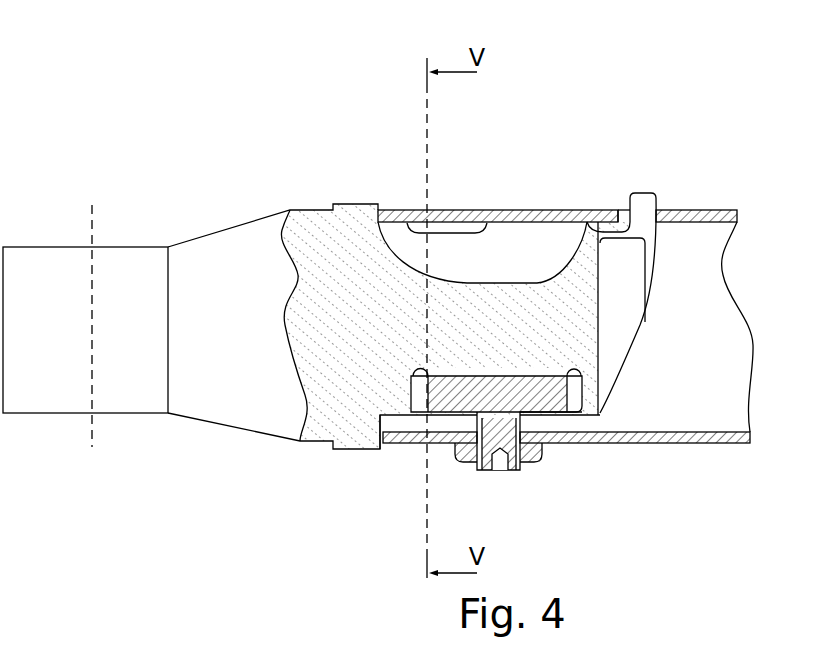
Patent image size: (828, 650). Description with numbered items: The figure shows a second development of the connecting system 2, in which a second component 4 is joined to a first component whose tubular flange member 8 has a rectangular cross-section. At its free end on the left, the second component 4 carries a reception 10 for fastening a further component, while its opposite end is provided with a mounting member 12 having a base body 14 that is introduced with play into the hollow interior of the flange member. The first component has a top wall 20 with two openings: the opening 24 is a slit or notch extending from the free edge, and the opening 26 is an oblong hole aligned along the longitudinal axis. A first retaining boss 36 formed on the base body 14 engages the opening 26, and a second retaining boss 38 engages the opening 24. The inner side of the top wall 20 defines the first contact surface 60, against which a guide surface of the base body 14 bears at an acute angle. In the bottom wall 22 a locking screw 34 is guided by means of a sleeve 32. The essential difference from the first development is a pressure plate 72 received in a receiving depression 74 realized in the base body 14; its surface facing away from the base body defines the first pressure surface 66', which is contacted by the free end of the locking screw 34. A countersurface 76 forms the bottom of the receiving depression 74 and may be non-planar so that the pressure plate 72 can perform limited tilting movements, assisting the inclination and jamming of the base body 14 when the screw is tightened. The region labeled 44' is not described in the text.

The system for the connection of a first component and a second component 2 is at (486, 310).
The second component 4 is at (81, 176).
The tubular flange member 8 is at (723, 283).
The reception 10 is at (24, 351).
The mounting member 12 is at (475, 306).
The base body 14 is at (628, 335).
The top wall 20 is at (737, 216).
The bottom wall 22 is at (690, 444).
The opening 24 is at (380, 209).
The opening 26 is at (627, 209).
The sleeve 32 is at (540, 461).
The locking screw 34 is at (523, 463).
The first retaining boss 36 is at (636, 196).
The second retaining boss 38 is at (315, 213).
The bottom wall 44' is at (390, 485).
The first contact surface 60 is at (707, 225).
The first pressure surface 66' is at (575, 459).
The pressure plate 72 is at (420, 388).
The receiving depression 74 is at (469, 452).
The countersurface 76 is at (453, 393).